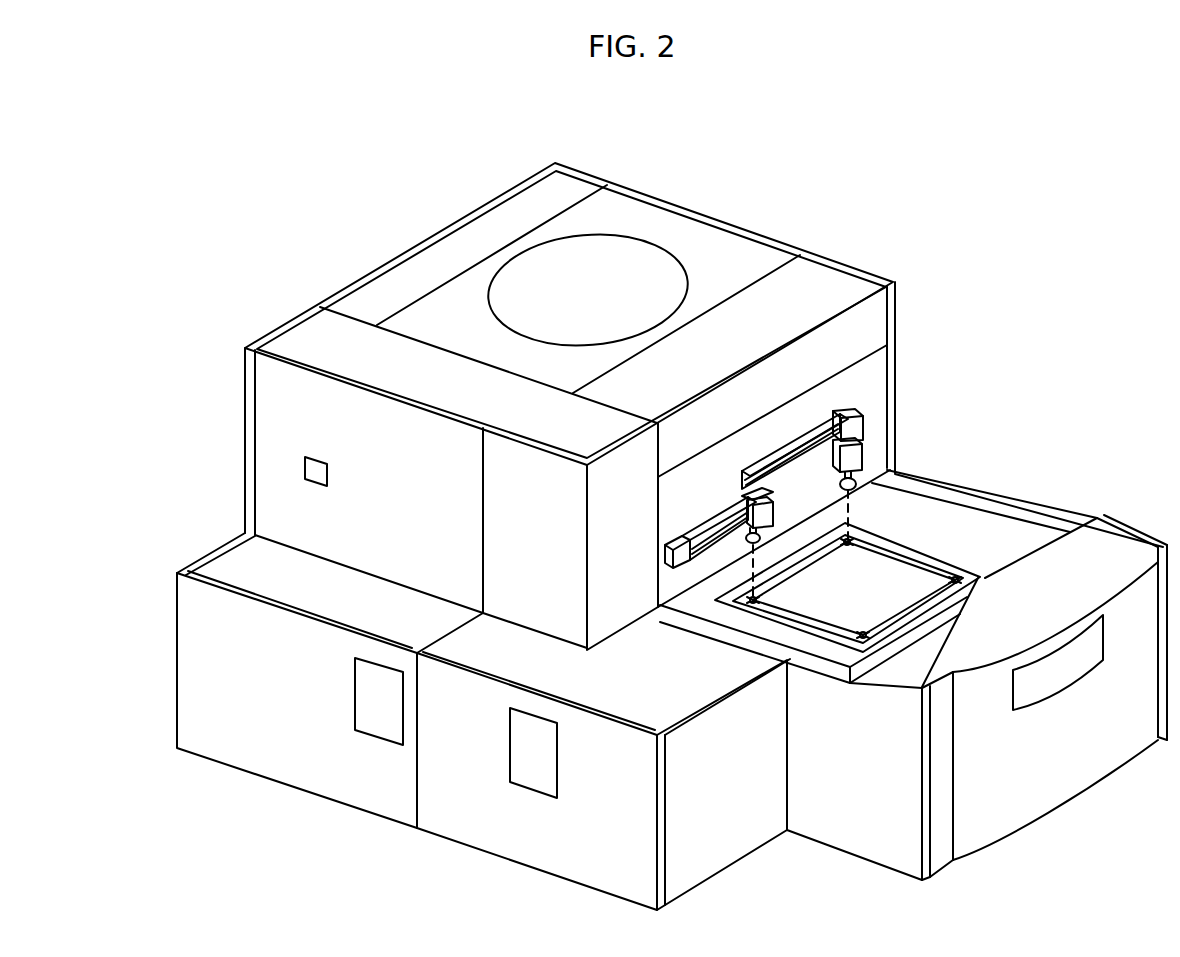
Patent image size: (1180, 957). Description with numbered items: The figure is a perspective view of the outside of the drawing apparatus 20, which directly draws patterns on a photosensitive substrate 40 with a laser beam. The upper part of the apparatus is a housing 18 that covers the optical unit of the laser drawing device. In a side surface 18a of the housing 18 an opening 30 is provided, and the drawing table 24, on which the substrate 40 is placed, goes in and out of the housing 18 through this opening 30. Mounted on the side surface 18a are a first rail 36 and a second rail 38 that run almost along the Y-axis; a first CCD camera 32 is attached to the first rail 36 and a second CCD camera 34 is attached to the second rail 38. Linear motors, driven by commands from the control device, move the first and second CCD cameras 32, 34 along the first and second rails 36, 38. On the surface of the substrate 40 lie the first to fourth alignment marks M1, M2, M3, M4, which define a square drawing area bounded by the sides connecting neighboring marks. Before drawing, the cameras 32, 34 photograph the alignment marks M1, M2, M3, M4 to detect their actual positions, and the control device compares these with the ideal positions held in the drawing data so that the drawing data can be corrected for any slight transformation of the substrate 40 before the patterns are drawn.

The drawing apparatus 20 is at (308, 186).
The housing 18 is at (725, 255).
The side surface 18a is at (877, 367).
The first CCD camera 32 is at (853, 432).
The second CCD camera 34 is at (745, 502).
The first rail 36 is at (818, 432).
The second rail 38 is at (710, 523).
The opening 30 is at (837, 513).
The drawing table 24 is at (912, 548).
The photosensitive substrate 40 is at (927, 578).
The first alignment mark M1 is at (848, 545).
The second alignment mark M2 is at (752, 601).
The third alignment mark M3 is at (960, 582).
The fourth alignment mark M4 is at (868, 638).